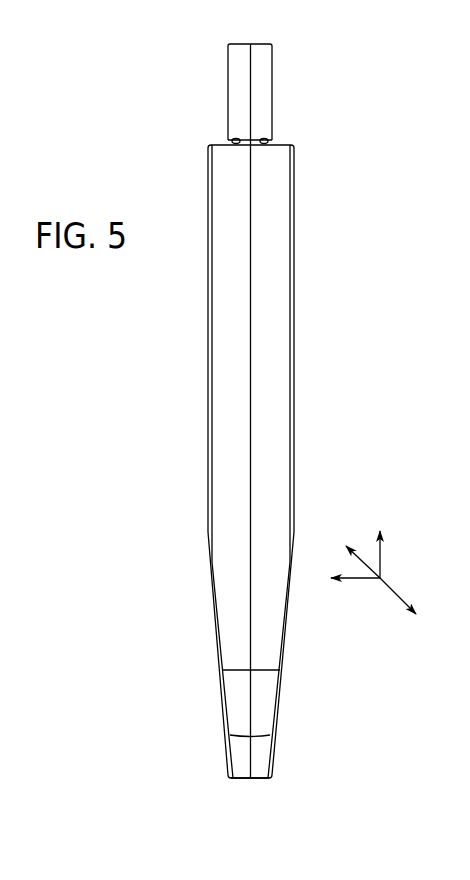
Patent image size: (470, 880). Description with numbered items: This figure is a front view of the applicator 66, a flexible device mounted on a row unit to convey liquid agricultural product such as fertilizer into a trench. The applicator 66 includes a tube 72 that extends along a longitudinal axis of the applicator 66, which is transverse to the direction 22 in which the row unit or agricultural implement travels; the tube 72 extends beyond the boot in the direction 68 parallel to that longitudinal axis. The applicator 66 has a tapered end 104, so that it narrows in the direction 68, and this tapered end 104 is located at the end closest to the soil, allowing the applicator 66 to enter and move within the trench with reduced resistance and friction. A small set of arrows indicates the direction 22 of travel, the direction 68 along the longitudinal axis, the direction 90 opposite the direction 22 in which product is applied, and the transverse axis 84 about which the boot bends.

The applicator 66 is at (164, 129).
The tube portion 72 is at (258, 102).
The tapered end 104 is at (286, 748).
The direction 68 is at (382, 560).
The transverse axis 84 is at (363, 582).
The direction 90 is at (363, 565).
The direction of travel 22 is at (397, 590).